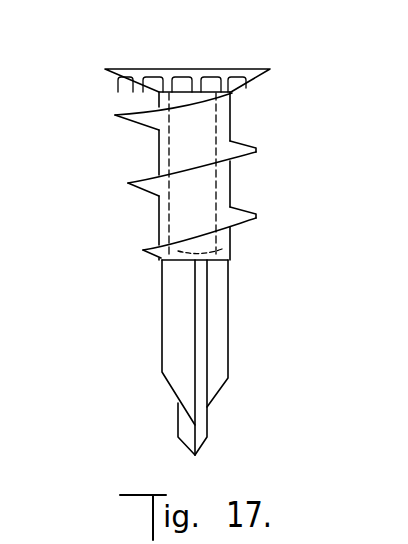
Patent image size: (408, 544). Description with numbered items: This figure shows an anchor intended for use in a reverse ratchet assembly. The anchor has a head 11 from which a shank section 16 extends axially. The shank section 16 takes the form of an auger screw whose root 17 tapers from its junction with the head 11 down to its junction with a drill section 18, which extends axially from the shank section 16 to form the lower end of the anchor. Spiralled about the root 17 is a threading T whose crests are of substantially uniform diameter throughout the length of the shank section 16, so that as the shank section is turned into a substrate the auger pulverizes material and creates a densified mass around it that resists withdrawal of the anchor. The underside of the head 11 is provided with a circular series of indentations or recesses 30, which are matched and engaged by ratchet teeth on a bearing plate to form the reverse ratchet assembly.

The head 11 is at (187, 54).
The recesses 30 is at (186, 88).
The root 17 is at (231, 113).
The shank section 16 is at (200, 175).
The threading T is at (142, 183).
The drill section 18 is at (237, 324).